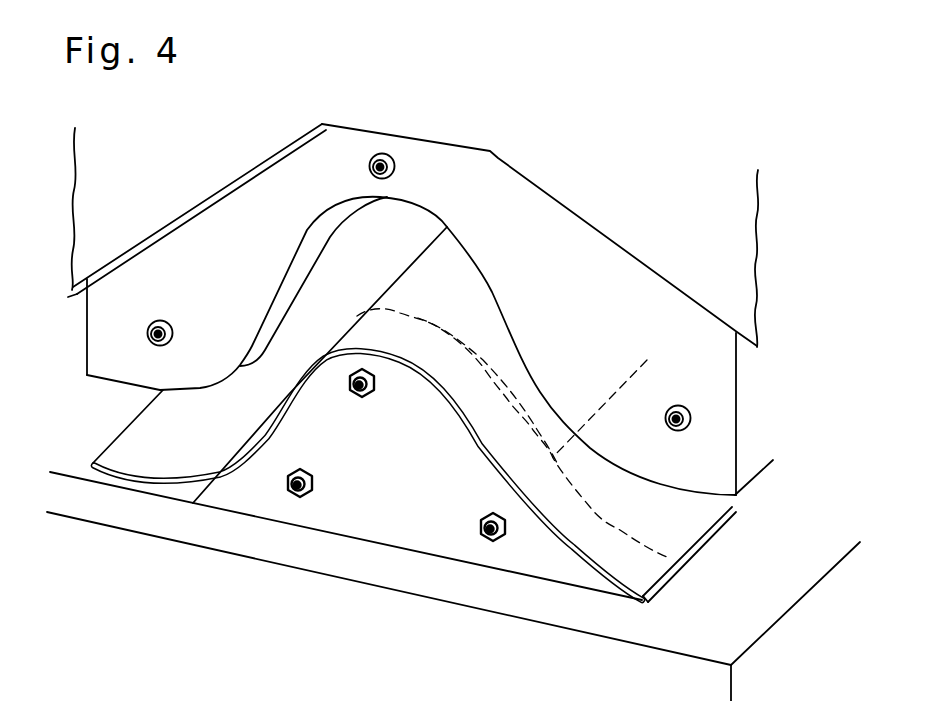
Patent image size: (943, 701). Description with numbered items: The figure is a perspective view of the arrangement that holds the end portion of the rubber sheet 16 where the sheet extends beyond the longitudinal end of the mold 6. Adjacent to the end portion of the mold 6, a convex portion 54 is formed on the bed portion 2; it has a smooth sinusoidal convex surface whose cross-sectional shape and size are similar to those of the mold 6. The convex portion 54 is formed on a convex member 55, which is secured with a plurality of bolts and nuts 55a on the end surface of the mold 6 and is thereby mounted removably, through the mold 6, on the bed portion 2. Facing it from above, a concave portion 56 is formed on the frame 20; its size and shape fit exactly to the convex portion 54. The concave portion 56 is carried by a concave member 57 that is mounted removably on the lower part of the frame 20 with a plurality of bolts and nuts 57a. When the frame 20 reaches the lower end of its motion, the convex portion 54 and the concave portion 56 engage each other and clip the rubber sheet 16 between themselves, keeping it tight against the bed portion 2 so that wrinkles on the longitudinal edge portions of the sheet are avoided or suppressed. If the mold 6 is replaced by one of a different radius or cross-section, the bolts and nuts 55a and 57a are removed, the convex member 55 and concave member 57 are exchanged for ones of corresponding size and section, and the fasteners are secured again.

The bed portion 2 is at (763, 608).
The mold 6 is at (418, 275).
The rubber sheet 16 is at (667, 517).
The frame 20 is at (697, 141).
The convex portion 54 is at (458, 432).
The convex member 55 is at (437, 533).
The bolts and nuts 55a is at (375, 382).
The concave portion 56 is at (492, 293).
The concave member 57 is at (92, 300).
The bolts and nuts 57a is at (161, 321).